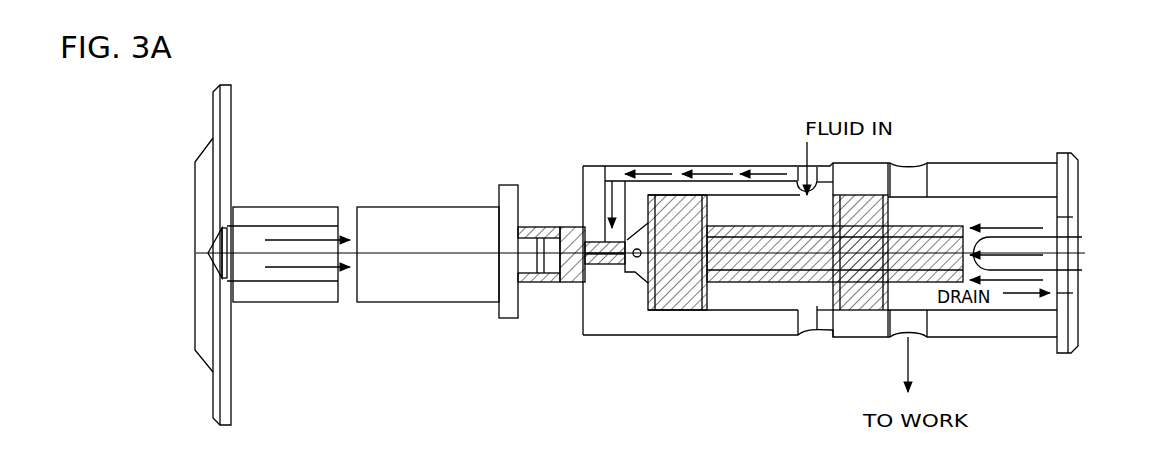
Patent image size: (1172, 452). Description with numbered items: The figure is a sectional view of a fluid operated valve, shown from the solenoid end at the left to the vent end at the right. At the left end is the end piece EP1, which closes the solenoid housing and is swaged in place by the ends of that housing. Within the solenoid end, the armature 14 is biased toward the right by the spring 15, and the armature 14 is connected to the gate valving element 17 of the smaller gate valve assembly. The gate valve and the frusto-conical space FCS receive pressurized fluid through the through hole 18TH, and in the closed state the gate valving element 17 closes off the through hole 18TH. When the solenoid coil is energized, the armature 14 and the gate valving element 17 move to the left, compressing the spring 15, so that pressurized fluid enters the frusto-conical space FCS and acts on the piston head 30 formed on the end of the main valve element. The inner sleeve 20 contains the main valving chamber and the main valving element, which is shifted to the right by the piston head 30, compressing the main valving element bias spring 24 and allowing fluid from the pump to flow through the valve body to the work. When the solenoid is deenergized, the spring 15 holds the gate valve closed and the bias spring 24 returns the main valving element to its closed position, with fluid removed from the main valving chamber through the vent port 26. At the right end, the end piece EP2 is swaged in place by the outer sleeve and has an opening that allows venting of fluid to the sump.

The end piece EP1 is at (195, 162).
The spring 15 is at (293, 270).
The armature 14 is at (457, 207).
The gate valving element 17 is at (602, 264).
The through hole 18TH is at (720, 172).
The frusto-conical space FCS is at (643, 284).
The piston head 30 is at (633, 274).
The inner sleeve 20 is at (727, 336).
The main valving element bias spring 24 is at (998, 226).
The vent port 26 is at (1063, 232).
The end piece EP2 is at (1077, 186).